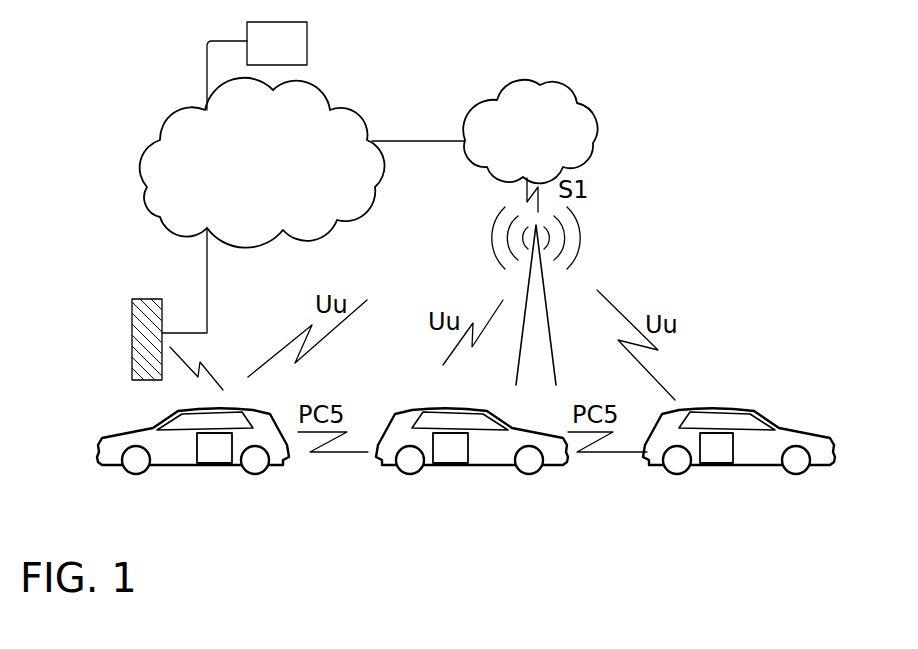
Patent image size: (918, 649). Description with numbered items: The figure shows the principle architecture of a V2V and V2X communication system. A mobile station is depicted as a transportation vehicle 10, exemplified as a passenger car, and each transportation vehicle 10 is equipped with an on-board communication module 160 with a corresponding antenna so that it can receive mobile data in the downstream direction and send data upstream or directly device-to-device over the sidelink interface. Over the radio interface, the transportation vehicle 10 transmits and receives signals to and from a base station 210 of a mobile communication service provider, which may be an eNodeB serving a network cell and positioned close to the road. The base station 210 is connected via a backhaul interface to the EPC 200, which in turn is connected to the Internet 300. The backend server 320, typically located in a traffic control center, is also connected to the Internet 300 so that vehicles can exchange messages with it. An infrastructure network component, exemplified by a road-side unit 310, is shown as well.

The transportation vehicle 10 is at (168, 455).
The on-board communication module 160 is at (218, 455).
The EPC 200 is at (552, 97).
The base station 210 is at (543, 283).
The Internet 300 is at (328, 125).
The road-side unit 310 is at (150, 300).
The backend server 320 is at (295, 34).